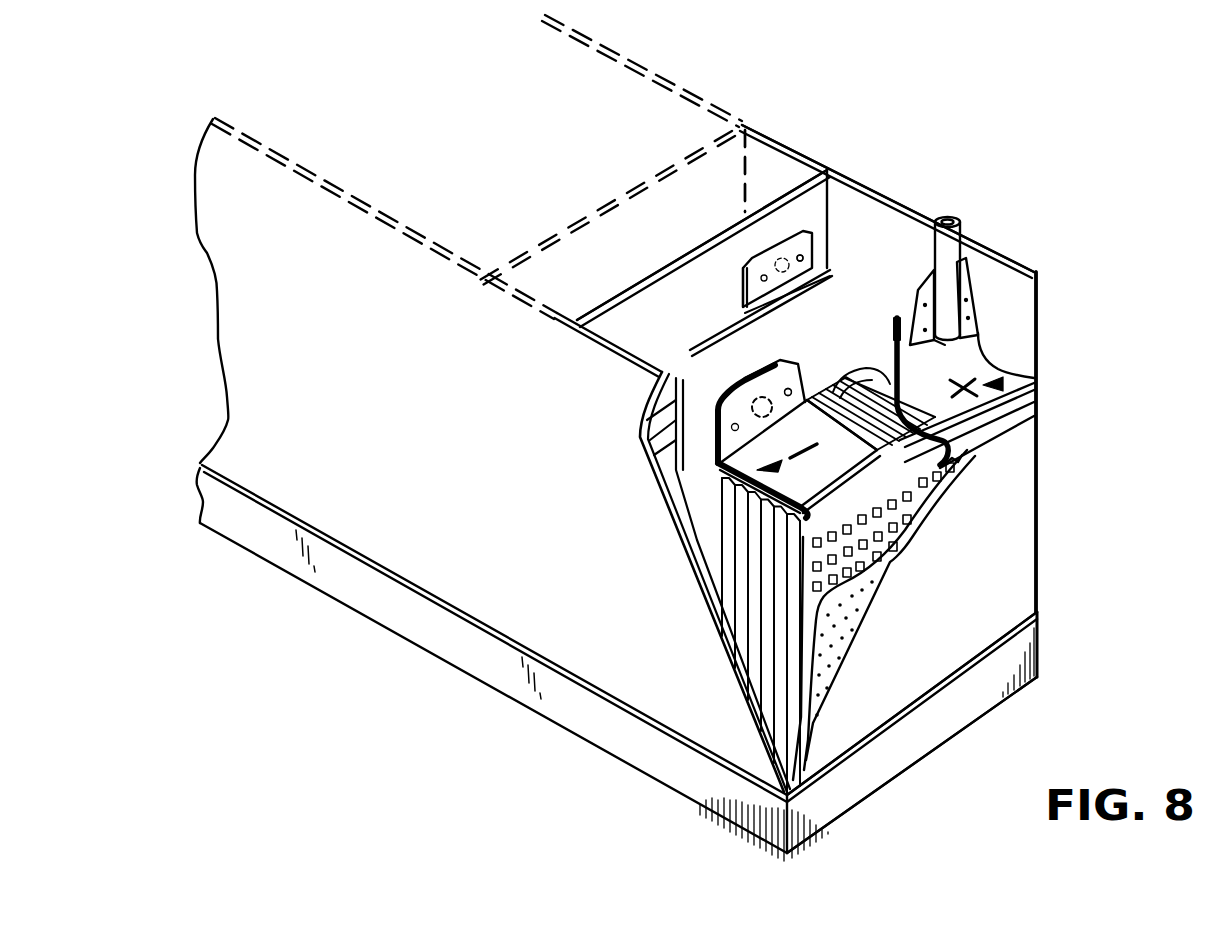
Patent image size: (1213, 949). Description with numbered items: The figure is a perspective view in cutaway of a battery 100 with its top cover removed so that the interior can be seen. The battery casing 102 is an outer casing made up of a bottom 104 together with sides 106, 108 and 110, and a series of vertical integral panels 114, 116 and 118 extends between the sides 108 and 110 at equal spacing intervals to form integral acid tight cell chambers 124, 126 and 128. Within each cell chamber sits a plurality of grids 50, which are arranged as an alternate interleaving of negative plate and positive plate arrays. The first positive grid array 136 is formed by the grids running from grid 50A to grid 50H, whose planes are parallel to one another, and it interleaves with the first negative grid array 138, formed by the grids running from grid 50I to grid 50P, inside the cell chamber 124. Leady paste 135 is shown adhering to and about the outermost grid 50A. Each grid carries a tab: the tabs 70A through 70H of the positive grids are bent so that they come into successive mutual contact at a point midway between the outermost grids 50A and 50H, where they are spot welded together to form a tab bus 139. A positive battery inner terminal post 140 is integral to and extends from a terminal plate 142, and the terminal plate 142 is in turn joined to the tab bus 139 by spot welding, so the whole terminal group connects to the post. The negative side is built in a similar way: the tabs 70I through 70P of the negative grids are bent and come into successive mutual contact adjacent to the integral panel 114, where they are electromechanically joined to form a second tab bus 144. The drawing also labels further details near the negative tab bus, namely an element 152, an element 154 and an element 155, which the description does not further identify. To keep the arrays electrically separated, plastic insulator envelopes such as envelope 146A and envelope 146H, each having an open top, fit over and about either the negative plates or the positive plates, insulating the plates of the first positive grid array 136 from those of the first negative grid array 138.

The grids 50 is at (803, 563).
The grid 50A is at (1013, 411).
The grid 50H is at (870, 370).
The grid 50I is at (770, 522).
The grid 50P is at (712, 476).
The tab 70A is at (967, 328).
The tab 70H is at (907, 310).
The tab 70I is at (800, 370).
The tab 70P is at (713, 430).
The battery 100 is at (1018, 500).
The battery casing 102 is at (1018, 572).
The bottom 104 is at (860, 775).
The side 106 is at (972, 598).
The side 108 is at (395, 404).
The side 110 is at (1017, 350).
The vertical integral panel 114 is at (903, 237).
The vertical integral panel 116 is at (815, 197).
The vertical integral panel 118 is at (744, 134).
The integral acid tight cell chamber 124 is at (1001, 238).
The integral acid tight cell chamber 126 is at (890, 184).
The integral acid tight cell chamber 128 is at (810, 140).
The leady paste 135 is at (837, 647).
The first positive grid array 136 is at (1000, 381).
The first negative grid array 138 is at (712, 494).
The tab bus 139 is at (903, 313).
The positive battery inner terminal post 140 is at (960, 223).
The terminal plate 142 is at (967, 285).
The tab bus 144 is at (790, 367).
The plastic insulator envelope 146A is at (790, 640).
The plastic insulator envelope 146H is at (700, 512).
The plate flange 152 is at (753, 400).
The mounting hole 154 is at (757, 366).
The upper mounting plate 155 is at (808, 239).